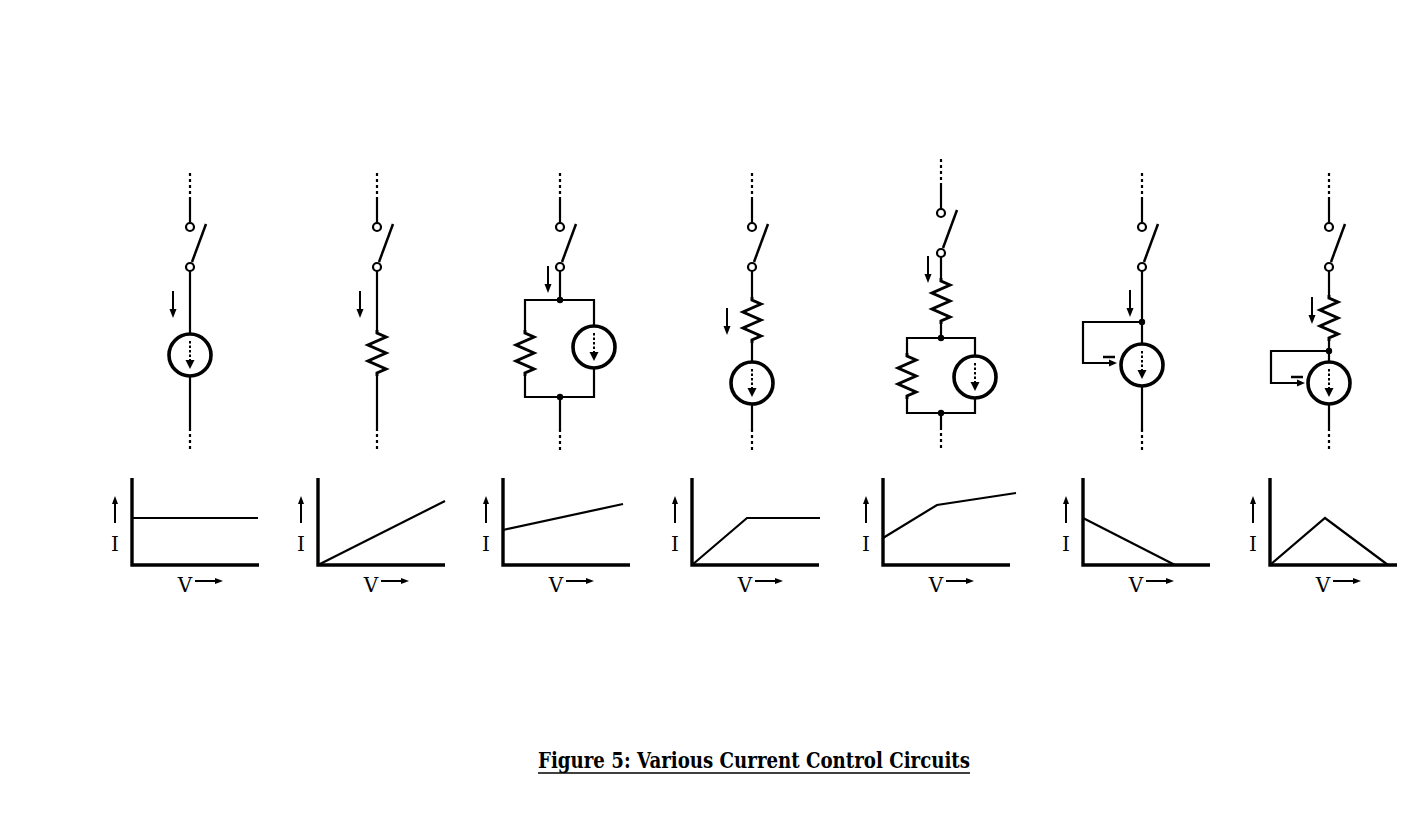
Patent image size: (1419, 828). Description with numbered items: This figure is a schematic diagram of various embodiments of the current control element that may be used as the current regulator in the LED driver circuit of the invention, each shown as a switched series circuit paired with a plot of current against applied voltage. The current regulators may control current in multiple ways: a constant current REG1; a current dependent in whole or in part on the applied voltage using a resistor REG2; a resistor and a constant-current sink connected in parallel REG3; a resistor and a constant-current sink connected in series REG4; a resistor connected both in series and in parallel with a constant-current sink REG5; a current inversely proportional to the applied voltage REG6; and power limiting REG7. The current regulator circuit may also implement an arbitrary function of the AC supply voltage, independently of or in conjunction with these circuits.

The constant current regulator REG1 is at (173, 148).
The resistor current regulator REG2 is at (361, 148).
The parallel resistor and constant-current sink regulator REG3 is at (547, 148).
The series resistor and constant-current sink regulator REG4 is at (740, 148).
The series and parallel resistor with constant-current sink regulator REG5 is at (929, 148).
The inverse-voltage current regulator REG6 is at (1128, 148).
The power limiting current regulator REG7 is at (1320, 148).